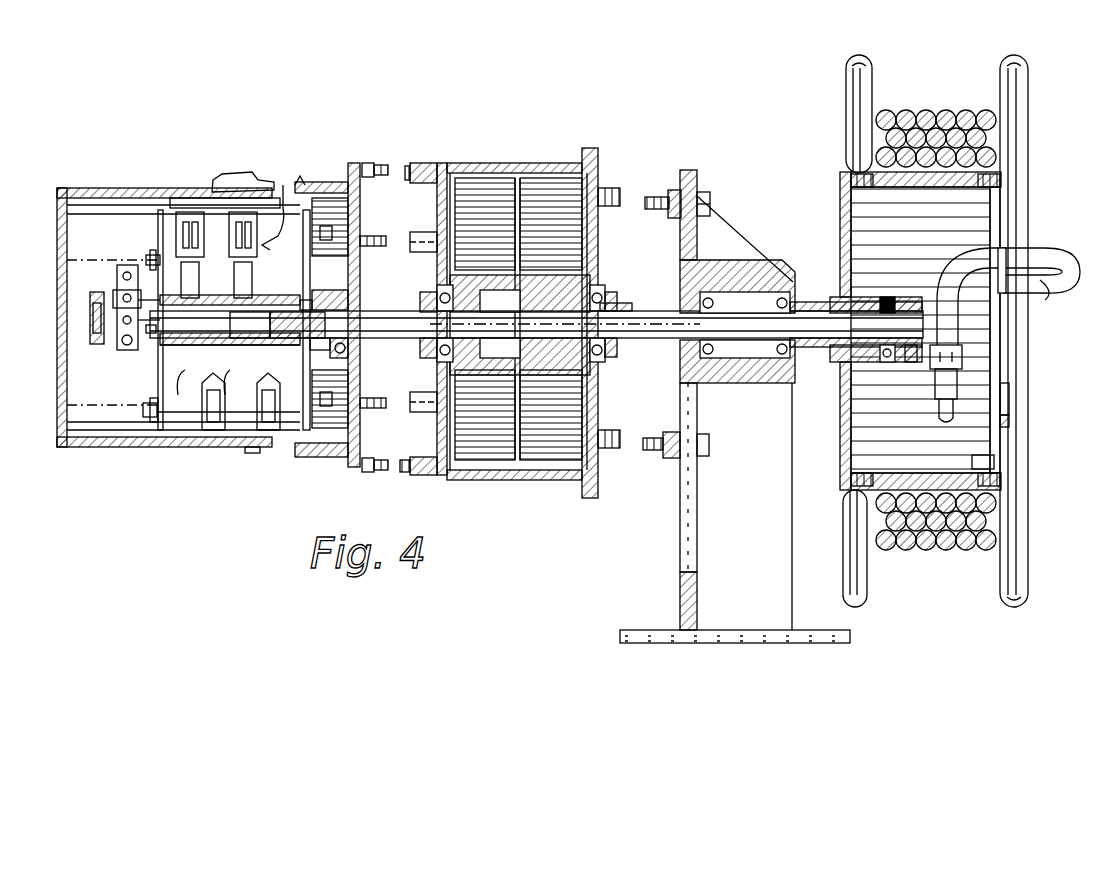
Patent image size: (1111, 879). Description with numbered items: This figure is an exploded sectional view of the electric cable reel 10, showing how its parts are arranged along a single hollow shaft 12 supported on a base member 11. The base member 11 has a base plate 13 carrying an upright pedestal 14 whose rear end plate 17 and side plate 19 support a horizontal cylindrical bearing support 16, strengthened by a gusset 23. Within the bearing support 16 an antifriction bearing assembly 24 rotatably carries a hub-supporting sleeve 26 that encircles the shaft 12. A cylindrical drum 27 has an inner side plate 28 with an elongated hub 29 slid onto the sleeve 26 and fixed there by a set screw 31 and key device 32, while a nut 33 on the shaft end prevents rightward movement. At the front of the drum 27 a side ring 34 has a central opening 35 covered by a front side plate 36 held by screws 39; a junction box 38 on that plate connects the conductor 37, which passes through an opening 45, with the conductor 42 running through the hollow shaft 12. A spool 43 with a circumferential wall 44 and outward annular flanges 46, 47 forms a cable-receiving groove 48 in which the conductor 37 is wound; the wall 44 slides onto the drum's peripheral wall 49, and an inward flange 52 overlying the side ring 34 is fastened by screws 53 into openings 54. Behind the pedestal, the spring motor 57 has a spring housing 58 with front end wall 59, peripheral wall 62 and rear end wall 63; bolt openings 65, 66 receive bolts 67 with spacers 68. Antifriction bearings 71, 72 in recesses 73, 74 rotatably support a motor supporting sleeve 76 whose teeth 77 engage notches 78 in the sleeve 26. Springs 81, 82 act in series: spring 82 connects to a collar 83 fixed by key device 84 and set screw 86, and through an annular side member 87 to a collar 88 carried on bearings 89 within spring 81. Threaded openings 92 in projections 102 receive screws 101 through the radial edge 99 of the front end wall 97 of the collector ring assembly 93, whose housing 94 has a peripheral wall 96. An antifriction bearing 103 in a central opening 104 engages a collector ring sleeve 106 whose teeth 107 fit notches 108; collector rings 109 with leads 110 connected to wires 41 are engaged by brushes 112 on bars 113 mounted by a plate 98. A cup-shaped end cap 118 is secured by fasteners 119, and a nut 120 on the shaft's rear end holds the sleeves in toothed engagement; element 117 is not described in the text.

The electric cable reel 10 is at (1030, 616).
The base member 11 is at (662, 657).
The hollow shaft 12 is at (818, 348).
The base plate 13 is at (787, 638).
The pedestal 14 is at (678, 582).
The bearing support 16 is at (760, 286).
The rear end plate 17 is at (695, 612).
The side plate 19 is at (746, 634).
The gusset 23 is at (722, 255).
The antifriction bearing assembly 24 is at (795, 279).
The hub-supporting sleeve 26 is at (795, 305).
The drum 27 is at (838, 199).
The inner side plate 28 is at (840, 444).
The hub 29 is at (885, 299).
The set screw 31 is at (893, 299).
The key device 32 is at (887, 362).
The nut 33 is at (912, 362).
The side ring 34 is at (1006, 198).
The central opening 35 is at (990, 232).
The front side plate 36 is at (1009, 394).
The conductor 37 is at (928, 118).
The junction box 38 is at (1068, 258).
The screws 39 is at (1010, 420).
The wires 41 is at (240, 346).
The conductor 42 is at (275, 346).
The spool 43 is at (1029, 86).
The circumferential wall 44 is at (946, 124).
The opening 45 is at (1006, 240).
The annular flange 46 is at (847, 86).
The annular flange 47 is at (1017, 128).
The cable-receiving groove 48 is at (872, 78).
The peripheral wall 49 is at (956, 560).
The annular flange 52 is at (1003, 187).
The screws 53 is at (1002, 486).
The openings 54 is at (975, 463).
The spring motor 57 is at (506, 160).
The spring housing 58 is at (446, 163).
The front end wall 59 is at (598, 160).
The peripheral wall 62 is at (486, 480).
The rear end wall 63 is at (437, 215).
The bolt openings 65 is at (612, 196).
The bolt openings 66 is at (698, 196).
The bolts 67 is at (650, 206).
The spacers 68 is at (676, 190).
The antifriction bearing 71 is at (432, 287).
The antifriction bearing 72 is at (605, 282).
The recess 73 is at (424, 300).
The recess 74 is at (614, 294).
The motor supporting sleeve 76 is at (490, 320).
The teeth 77 is at (622, 310).
The notches 78 is at (698, 382).
The spring 81 is at (488, 184).
The spring 82 is at (560, 184).
The collar 83 is at (598, 387).
The key device 84 is at (560, 332).
The set screw 86 is at (572, 286).
The annular side member 87 is at (517, 226).
The collar 88 is at (486, 376).
The bearings 89 is at (476, 285).
The threaded openings 92 is at (414, 478).
The collector ring assembly 93 is at (282, 180).
The housing 94 is at (320, 462).
The peripheral wall 96 is at (324, 182).
The front end wall 97 is at (360, 226).
The plate 98 is at (360, 207).
The radial edge 99 is at (362, 472).
The screws 101 is at (370, 165).
The projections 102 is at (426, 462).
The antifriction bearing 103 is at (350, 362).
The central opening 104 is at (350, 300).
The collector ring sleeve 106 is at (160, 366).
The teeth 107 is at (350, 345).
The notches 108 is at (426, 358).
The collector rings 109 is at (216, 282).
The leads 110 is at (150, 290).
The brushes 112 is at (262, 405).
The bars 113 is at (180, 412).
The panel 117 is at (108, 205).
The end cap 118 is at (57, 226).
The fasteners 119 is at (233, 176).
The nut 120 is at (104, 292).